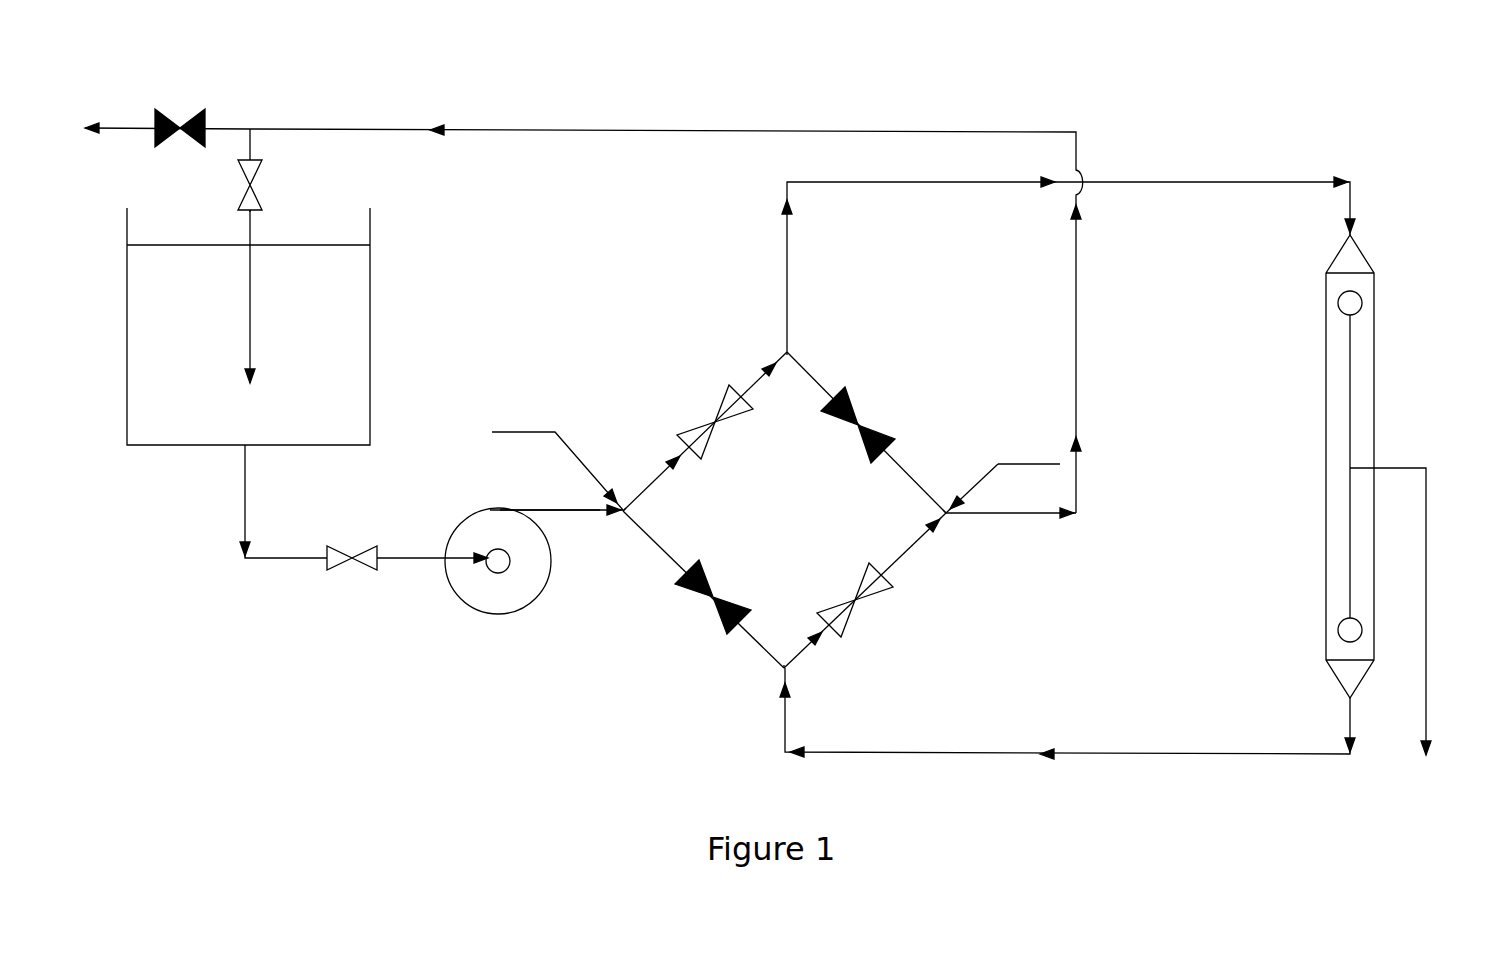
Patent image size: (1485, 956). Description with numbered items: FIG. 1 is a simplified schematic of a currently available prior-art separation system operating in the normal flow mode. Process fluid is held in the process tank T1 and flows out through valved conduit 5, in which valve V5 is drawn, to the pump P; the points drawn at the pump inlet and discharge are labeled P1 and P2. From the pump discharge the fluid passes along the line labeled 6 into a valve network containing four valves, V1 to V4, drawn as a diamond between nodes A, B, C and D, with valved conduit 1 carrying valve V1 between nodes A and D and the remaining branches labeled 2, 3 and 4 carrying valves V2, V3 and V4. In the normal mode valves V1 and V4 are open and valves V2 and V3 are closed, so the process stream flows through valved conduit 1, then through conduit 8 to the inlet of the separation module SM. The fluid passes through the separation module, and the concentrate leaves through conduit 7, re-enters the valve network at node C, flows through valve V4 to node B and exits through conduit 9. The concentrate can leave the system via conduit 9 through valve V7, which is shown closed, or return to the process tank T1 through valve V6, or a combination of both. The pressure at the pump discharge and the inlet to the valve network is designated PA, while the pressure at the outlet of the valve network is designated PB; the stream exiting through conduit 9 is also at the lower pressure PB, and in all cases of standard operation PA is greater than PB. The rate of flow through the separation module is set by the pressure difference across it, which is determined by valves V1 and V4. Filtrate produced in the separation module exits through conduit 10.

The valved conduit 1 is at (705, 431).
The line from node A to node C through valve V2 2 is at (703, 589).
The line from node D to node B through valve V3 3 is at (866, 432).
The line from node C to node B through valve V4 4 is at (865, 590).
The valved conduit 5 is at (283, 501).
The pump discharge line to node A 6 is at (556, 527).
The conduit 7 is at (1067, 713).
The conduit 8 is at (1068, 332).
The conduit 9 is at (584, 305).
The conduit 10 is at (1412, 611).
The valve V1 is at (708, 420).
The valve V2 is at (705, 599).
The valve V3 is at (865, 424).
The valve V4 is at (862, 600).
The valve V5 is at (352, 576).
The valve V6 is at (274, 170).
The valve V7 is at (180, 115).
The pump inlet pressure point P1 is at (432, 543).
The pump outlet pressure point P2 is at (550, 492).
The pressure PA is at (557, 453).
The pressure PB is at (1003, 470).
The pump P is at (498, 596).
The process tank T1 is at (318, 326).
The separation module SM is at (1268, 466).
The node A is at (642, 512).
The node B is at (928, 512).
The node C is at (784, 646).
The node D is at (784, 377).